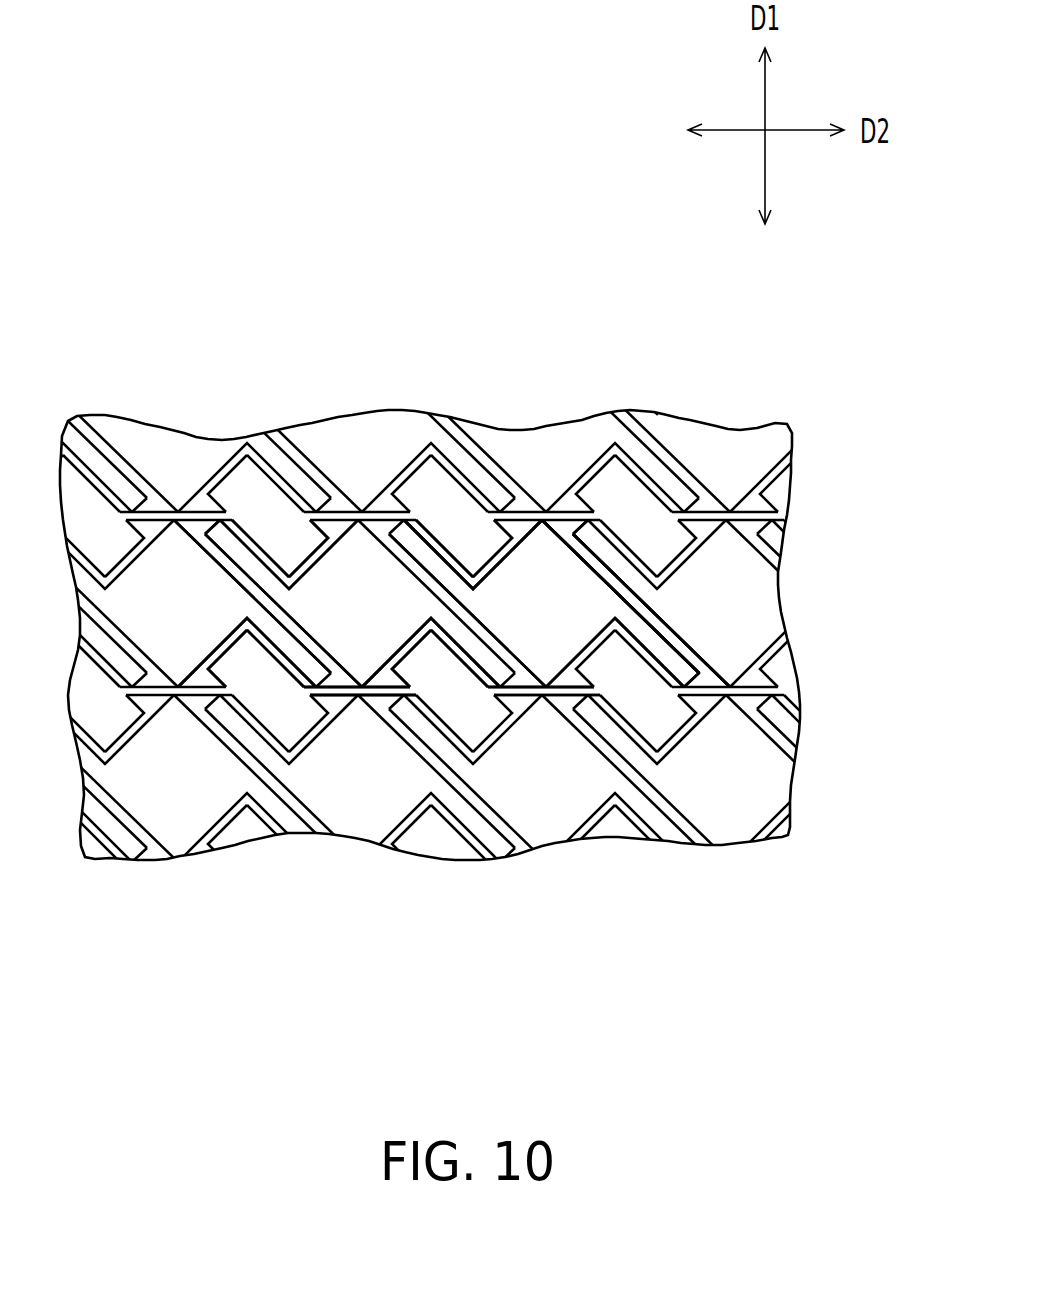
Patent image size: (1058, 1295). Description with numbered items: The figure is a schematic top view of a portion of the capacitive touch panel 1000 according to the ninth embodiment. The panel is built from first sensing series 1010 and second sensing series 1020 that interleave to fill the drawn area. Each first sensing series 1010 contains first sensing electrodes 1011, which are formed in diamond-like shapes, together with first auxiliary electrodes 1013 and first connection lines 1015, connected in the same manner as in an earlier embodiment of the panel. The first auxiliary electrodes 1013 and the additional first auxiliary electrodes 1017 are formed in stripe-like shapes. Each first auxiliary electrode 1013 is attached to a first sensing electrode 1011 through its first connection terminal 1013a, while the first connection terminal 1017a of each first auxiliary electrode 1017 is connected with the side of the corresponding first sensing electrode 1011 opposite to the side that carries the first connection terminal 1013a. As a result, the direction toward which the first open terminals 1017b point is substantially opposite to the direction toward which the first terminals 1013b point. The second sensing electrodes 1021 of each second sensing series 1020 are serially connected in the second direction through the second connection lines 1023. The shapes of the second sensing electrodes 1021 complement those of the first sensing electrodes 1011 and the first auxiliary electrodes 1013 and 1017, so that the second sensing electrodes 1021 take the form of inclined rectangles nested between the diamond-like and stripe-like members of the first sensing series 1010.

The capacitive touch panel 1000 is at (878, 1033).
The first sensing series 1010 is at (690, 957).
The first sensing electrode 1011 is at (520, 605).
The first auxiliary electrode 1013 is at (427, 560).
The first connection terminal 1013a is at (230, 540).
The first terminal 1013b is at (268, 583).
The first connection line 1015 is at (543, 697).
The first auxiliary electrode 1017 is at (660, 643).
The first connection terminal 1017a is at (630, 618).
The first open terminal 1017b is at (682, 670).
The second sensing series 1020 is at (283, 957).
The second sensing electrode 1021 is at (258, 700).
The second connection line 1023 is at (340, 690).